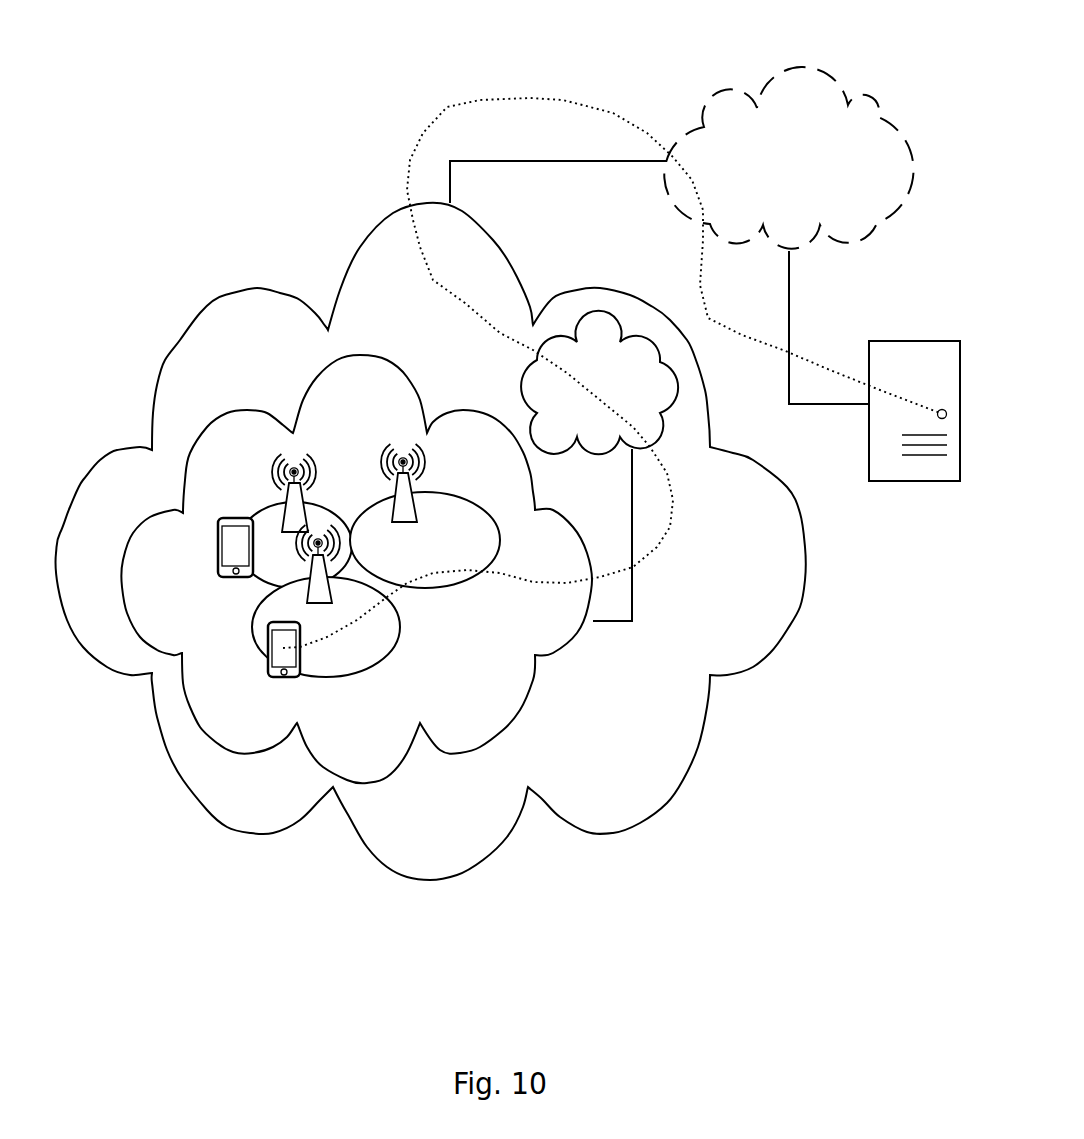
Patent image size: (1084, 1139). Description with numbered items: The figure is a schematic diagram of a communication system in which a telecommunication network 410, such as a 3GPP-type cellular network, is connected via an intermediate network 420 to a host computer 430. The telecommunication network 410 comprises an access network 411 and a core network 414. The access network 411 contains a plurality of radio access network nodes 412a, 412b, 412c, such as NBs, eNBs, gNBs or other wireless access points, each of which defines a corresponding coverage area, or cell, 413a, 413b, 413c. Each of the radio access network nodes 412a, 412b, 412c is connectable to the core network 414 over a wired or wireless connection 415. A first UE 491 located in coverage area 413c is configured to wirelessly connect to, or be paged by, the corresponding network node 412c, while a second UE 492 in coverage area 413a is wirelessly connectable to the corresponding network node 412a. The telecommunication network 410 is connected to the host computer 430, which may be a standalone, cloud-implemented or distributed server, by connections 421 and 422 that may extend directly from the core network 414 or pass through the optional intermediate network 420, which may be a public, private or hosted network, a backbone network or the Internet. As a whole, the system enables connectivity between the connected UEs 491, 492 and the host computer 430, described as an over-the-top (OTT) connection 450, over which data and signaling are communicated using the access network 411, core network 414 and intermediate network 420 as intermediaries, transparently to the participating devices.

The telecommunication network 410 is at (420, 316).
The access network 411 is at (374, 425).
The radio access network node 412a is at (332, 603).
The radio access network node 412b is at (420, 471).
The radio access network node 412c is at (283, 505).
The coverage area 413a is at (396, 588).
The coverage area 413b is at (465, 585).
The coverage area 413c is at (257, 513).
The core network 414 is at (625, 371).
The wired or wireless connection 415 is at (633, 587).
The intermediate network 420 is at (816, 177).
The connection 421 is at (573, 160).
The connection 422 is at (826, 404).
The host computer 430 is at (935, 481).
The over-the-top (OTT) connection 450 is at (433, 120).
The first UE 491 is at (220, 577).
The second UE 492 is at (273, 677).